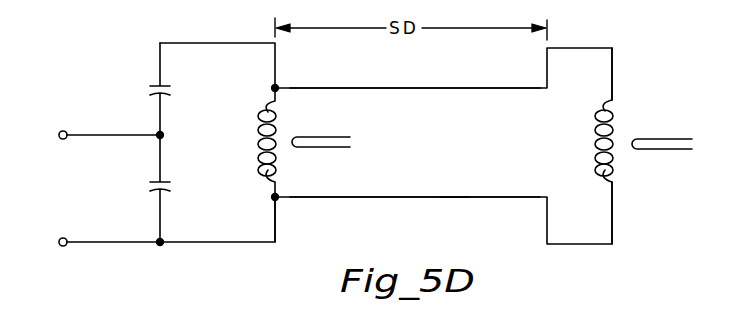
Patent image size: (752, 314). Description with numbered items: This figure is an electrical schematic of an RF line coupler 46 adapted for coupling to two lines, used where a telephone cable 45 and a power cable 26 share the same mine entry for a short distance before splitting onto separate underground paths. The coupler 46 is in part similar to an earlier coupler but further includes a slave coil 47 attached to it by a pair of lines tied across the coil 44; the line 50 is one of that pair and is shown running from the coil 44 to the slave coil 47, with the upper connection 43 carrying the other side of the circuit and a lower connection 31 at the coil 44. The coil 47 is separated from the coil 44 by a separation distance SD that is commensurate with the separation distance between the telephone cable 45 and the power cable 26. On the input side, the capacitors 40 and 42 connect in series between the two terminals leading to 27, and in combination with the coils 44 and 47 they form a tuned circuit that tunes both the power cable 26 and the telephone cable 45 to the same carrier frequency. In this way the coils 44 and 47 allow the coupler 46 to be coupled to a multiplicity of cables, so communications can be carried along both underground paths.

The circuit connection (to element 27) 27 is at (64, 188).
The capacitor 40 is at (165, 92).
The capacitor 42 is at (166, 188).
The coil 44 is at (267, 152).
The power cable 26 is at (301, 148).
The upper conductor 43 is at (467, 89).
The lower connecting conductor 31 is at (276, 215).
The RF line coupler 46 is at (418, 198).
The line 50 is at (453, 195).
The slave coil 47 is at (613, 92).
The telephone cable 45 is at (648, 150).